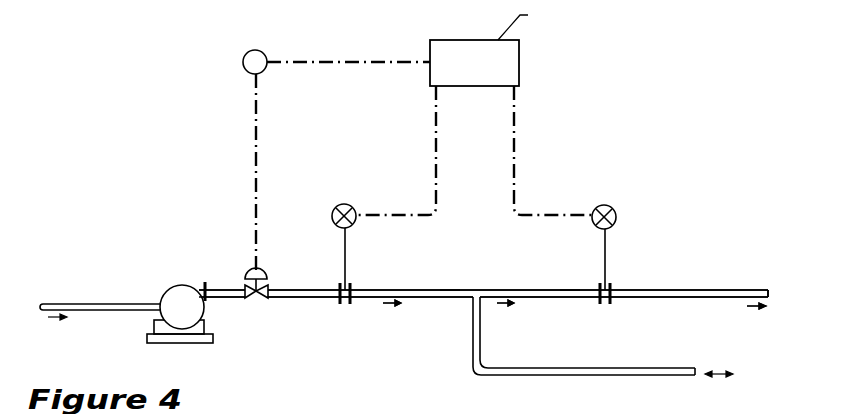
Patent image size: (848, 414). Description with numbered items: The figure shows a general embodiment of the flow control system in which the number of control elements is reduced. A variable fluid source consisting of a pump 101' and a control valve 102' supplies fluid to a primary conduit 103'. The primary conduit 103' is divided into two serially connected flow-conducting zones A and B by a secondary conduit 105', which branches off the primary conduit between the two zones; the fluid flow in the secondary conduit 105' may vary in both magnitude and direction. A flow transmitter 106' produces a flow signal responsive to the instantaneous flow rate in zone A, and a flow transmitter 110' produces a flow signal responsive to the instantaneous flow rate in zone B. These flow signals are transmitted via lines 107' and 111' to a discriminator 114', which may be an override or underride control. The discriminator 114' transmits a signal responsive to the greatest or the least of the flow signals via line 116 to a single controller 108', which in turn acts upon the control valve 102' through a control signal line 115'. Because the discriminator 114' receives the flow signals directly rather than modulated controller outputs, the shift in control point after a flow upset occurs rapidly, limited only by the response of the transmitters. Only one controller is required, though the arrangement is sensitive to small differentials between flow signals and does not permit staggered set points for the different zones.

The pump 101' is at (126, 296).
The control valve 102' is at (277, 308).
The primary conduit 103' is at (483, 287).
The secondary conduit 105' is at (603, 337).
The flow transmitter 106' is at (322, 237).
The flow signal line 107' is at (396, 150).
The controller 108' is at (281, 48).
The flow transmitter 110' is at (631, 241).
The flow signal line 111' is at (553, 150).
The discriminator 114' is at (539, 55).
The control signal line 115' is at (233, 176).
The signal line 116 is at (382, 66).
The flow-conducting zone A is at (448, 290).
The flow-conducting zone B is at (568, 290).